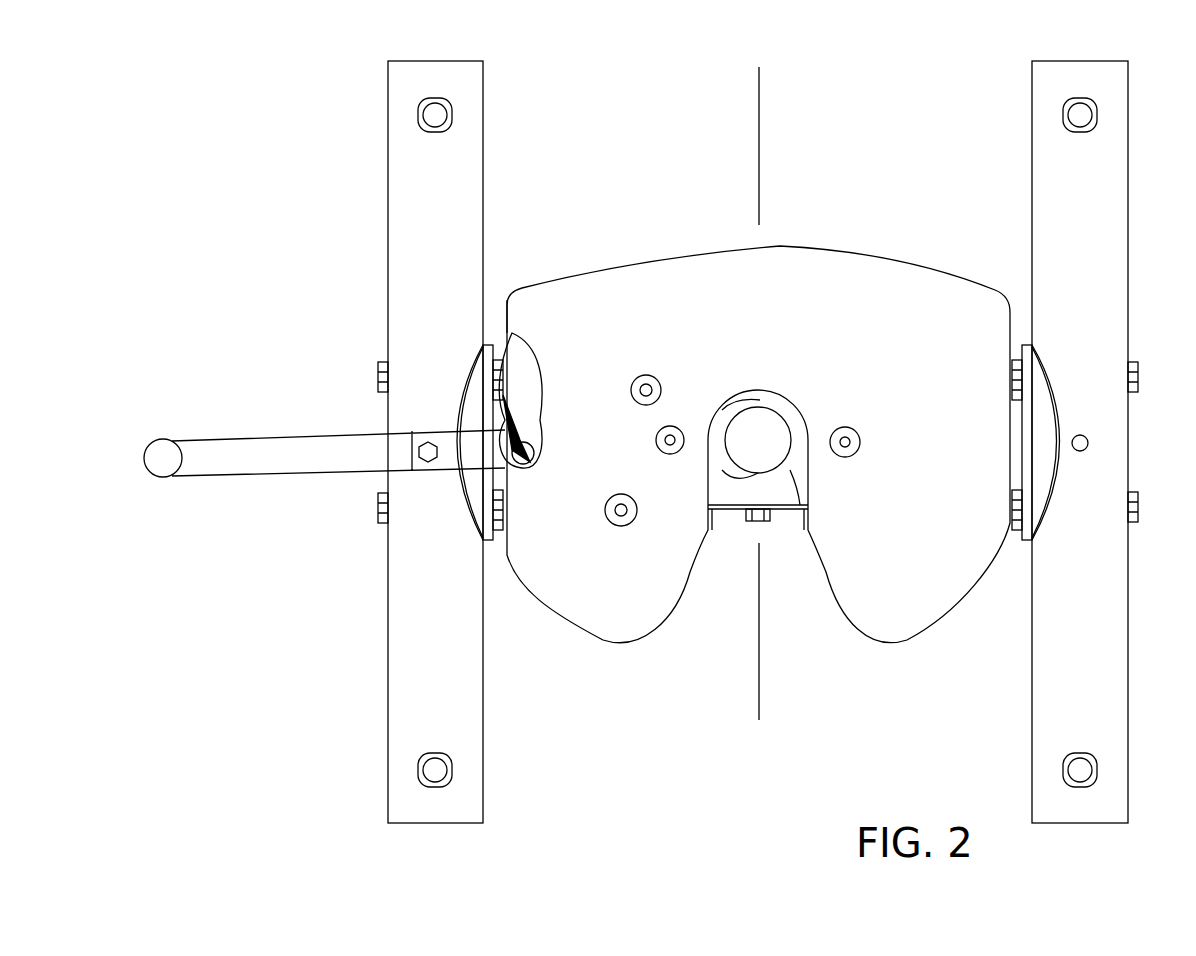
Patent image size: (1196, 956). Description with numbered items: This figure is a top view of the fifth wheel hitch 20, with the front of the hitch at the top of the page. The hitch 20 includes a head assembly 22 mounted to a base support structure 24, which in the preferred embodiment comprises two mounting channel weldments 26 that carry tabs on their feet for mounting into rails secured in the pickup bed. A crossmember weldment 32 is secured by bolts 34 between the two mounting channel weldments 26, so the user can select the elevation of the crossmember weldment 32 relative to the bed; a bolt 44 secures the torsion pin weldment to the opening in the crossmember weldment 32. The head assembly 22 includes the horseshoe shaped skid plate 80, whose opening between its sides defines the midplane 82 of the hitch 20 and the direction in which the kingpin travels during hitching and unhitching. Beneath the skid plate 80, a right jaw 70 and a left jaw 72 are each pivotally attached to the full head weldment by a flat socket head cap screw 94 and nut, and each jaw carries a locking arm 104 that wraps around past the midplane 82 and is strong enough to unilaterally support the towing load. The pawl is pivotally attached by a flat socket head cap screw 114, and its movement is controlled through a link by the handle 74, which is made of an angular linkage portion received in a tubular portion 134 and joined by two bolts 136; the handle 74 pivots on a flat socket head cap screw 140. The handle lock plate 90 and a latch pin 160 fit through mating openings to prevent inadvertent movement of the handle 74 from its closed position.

The fifth wheel hitch 20 is at (322, 195).
The head assembly 22 is at (758, 422).
The base support structure 24 is at (381, 291).
The mounting channel weldments 26 is at (418, 588).
The crossmember weldment 32 is at (806, 540).
The bolts 34 is at (378, 372).
The bolt 44 is at (762, 545).
The right jaw 70 is at (805, 450).
The left jaw 72 is at (712, 540).
The handle 74 is at (324, 455).
The skid plate 80 is at (657, 288).
The midplane 82 is at (760, 652).
The handle lock plate 90 is at (528, 418).
The flat socket head cap screw 94 is at (670, 426).
The locking arm 104 is at (723, 462).
The flat socket head cap screw 114 is at (621, 526).
The tubular portion 134 is at (297, 455).
The bolts 136 is at (425, 452).
The flat socket head cap screw 140 is at (646, 375).
The latch pin 160 is at (525, 465).